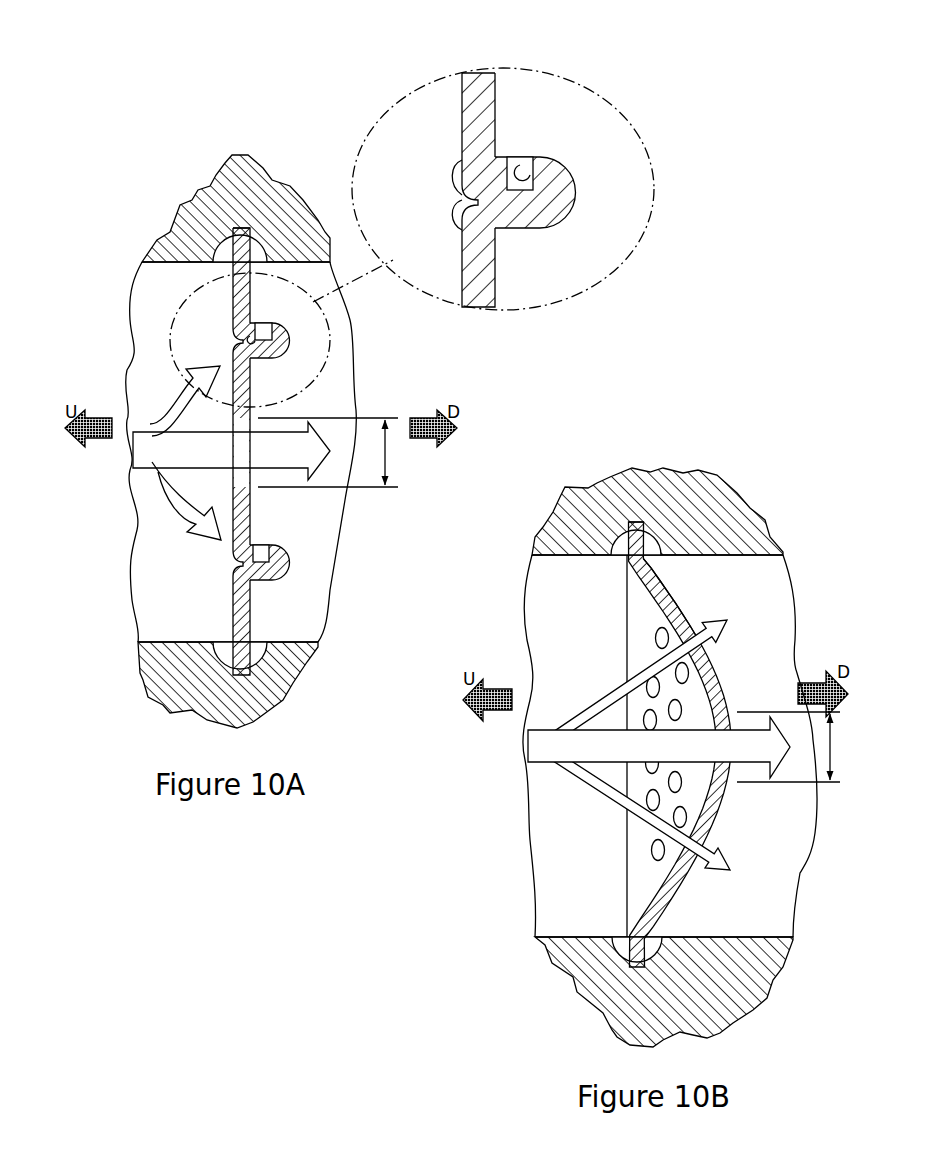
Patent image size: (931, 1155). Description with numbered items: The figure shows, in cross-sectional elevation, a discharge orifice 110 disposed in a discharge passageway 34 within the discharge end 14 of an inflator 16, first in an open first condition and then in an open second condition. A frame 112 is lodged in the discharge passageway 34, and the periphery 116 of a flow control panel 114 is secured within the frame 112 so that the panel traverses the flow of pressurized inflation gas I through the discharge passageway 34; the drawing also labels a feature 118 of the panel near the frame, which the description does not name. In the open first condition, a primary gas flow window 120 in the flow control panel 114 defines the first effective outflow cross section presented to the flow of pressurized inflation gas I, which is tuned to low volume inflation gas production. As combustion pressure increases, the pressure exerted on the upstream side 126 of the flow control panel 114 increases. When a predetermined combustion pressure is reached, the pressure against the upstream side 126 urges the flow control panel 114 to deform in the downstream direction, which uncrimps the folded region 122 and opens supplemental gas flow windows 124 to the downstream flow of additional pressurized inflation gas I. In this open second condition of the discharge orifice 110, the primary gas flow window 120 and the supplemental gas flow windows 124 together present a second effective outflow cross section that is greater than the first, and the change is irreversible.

In FIG. 10A, the discharge end 14 is at (190, 232).
In FIG. 10B, the discharge end 14 is at (597, 973).
In FIG. 10A, the inflator 16 is at (226, 152).
In FIG. 10B, the inflator 16 is at (656, 466).
In FIG. 10A, the discharge passageway 34 is at (244, 594).
In FIG. 10B, the discharge passageway 34 is at (657, 770).
In FIG. 10A, the discharge orifice 110 is at (237, 224).
In FIG. 10B, the discharge orifice 110 is at (643, 508).
In FIG. 10A, the frame 112 is at (250, 250).
In FIG. 10B, the frame 112 is at (648, 542).
In FIG. 10A, the flow control panel 114 is at (230, 333).
In FIG. 10B, the flow control panel 114 is at (505, 512).
In FIG. 10A, the periphery 116 is at (232, 283).
In FIG. 10B, the periphery 116 is at (638, 612).
In FIG. 10A, the bulb / downstream lip 118 is at (288, 334).
In FIG. 10B, the bulb / downstream lip 118 is at (650, 580).
In FIG. 10A, the primary gas flow window 120 is at (340, 452).
In FIG. 10B, the primary gas flow window 120 is at (802, 747).
In FIG. 10A, the folded region 122 is at (286, 366).
In FIG. 10A, the supplemental gas flow windows 124 is at (268, 324).
In FIG. 10B, the supplemental gas flow windows 124 is at (667, 634).
In FIG. 10A, the upstream side 126 is at (240, 322).
In FIG. 10B, the upstream side 126 is at (647, 653).
In FIG. 10A, the pressurized inflation gas I is at (172, 451).
In FIG. 10B, the pressurized inflation gas I is at (553, 750).